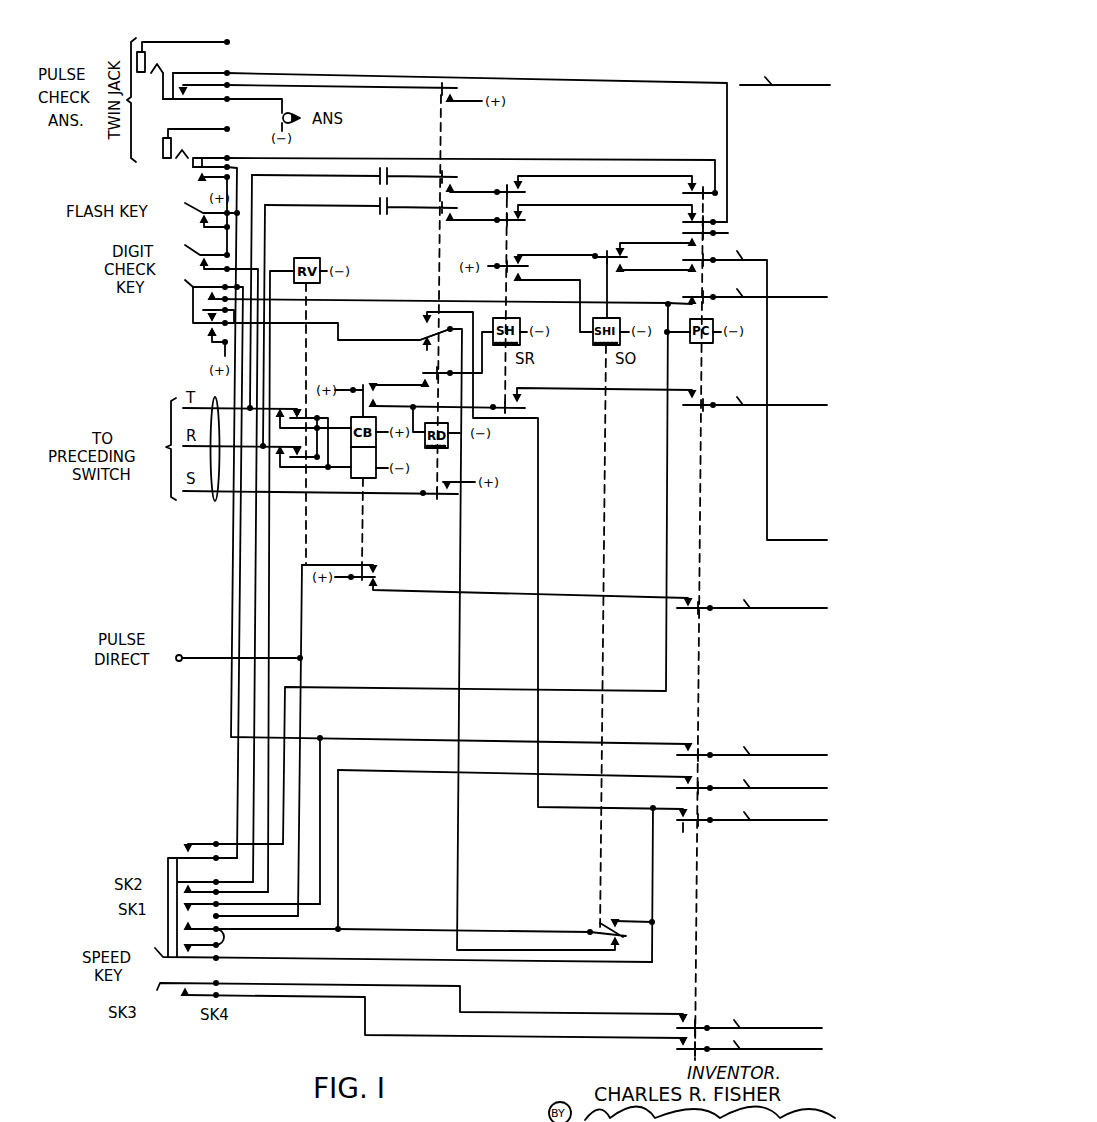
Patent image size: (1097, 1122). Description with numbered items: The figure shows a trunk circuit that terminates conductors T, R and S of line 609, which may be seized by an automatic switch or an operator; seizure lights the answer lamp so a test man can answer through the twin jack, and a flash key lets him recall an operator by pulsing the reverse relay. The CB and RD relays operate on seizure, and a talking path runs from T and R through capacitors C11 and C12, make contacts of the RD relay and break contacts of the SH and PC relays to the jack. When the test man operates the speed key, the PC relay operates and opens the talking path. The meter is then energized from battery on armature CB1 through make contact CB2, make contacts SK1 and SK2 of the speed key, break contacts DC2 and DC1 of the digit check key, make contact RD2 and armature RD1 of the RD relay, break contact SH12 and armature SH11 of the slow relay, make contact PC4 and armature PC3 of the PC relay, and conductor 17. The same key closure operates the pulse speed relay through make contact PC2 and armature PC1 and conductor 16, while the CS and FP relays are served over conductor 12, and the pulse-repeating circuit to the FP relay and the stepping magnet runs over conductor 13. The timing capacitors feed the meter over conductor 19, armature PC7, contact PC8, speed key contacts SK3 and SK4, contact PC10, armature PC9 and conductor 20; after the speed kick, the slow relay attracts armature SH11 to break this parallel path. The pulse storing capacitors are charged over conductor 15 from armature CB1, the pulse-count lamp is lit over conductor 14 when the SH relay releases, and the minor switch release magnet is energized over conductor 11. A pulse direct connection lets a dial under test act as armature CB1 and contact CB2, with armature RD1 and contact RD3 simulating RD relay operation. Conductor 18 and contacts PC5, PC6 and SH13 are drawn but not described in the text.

The conductor 11 is at (788, 86).
The conductor 12 is at (788, 298).
The conductor 13 is at (788, 406).
The conductor 14 is at (788, 541).
The conductor 15 is at (788, 609).
The conductor 16 is at (788, 756).
The conductor 17 is at (788, 789).
The conductor 18 is at (788, 821).
The conductor 19 is at (778, 1029).
The conductor 20 is at (778, 1050).
The line 609 is at (215, 503).
The capacitor C11 is at (354, 171).
The capacitor C12 is at (361, 211).
The break contact of digit check key DC1 is at (205, 330).
The break contact of digit check key DC2 is at (205, 318).
The armature of relay RD RD1 is at (420, 333).
The make contact of relay RD RD2 is at (427, 350).
The contact of relay RD RD3 is at (424, 321).
The armature of relay CB CB1 is at (383, 578).
The make contact of relay CB CB2 is at (375, 565).
The armature of relay PC PC1 is at (702, 753).
The make contact of relay PC PC2 is at (686, 742).
The armature of relay PC PC3 is at (681, 788).
The make contact of relay PC PC4 is at (686, 776).
The relay PC contact PC5 is at (683, 832).
The relay PC contact PC6 is at (688, 808).
The armature of relay PC PC7 is at (698, 1025).
The make contact of relay PC PC8 is at (683, 1013).
The armature of relay PC PC9 is at (683, 1050).
The make contact of relay PC PC10 is at (680, 1043).
The armature of relay SH1 SH11 is at (600, 923).
The break contact of relay SH1 SH12 is at (611, 941).
The relay SH contact SH13 is at (615, 920).
The make contact of speed key SK1 is at (178, 920).
The make contact of speed key SK2 is at (182, 902).
The speed key contact SK3 is at (157, 990).
The speed key contact SK4 is at (186, 998).